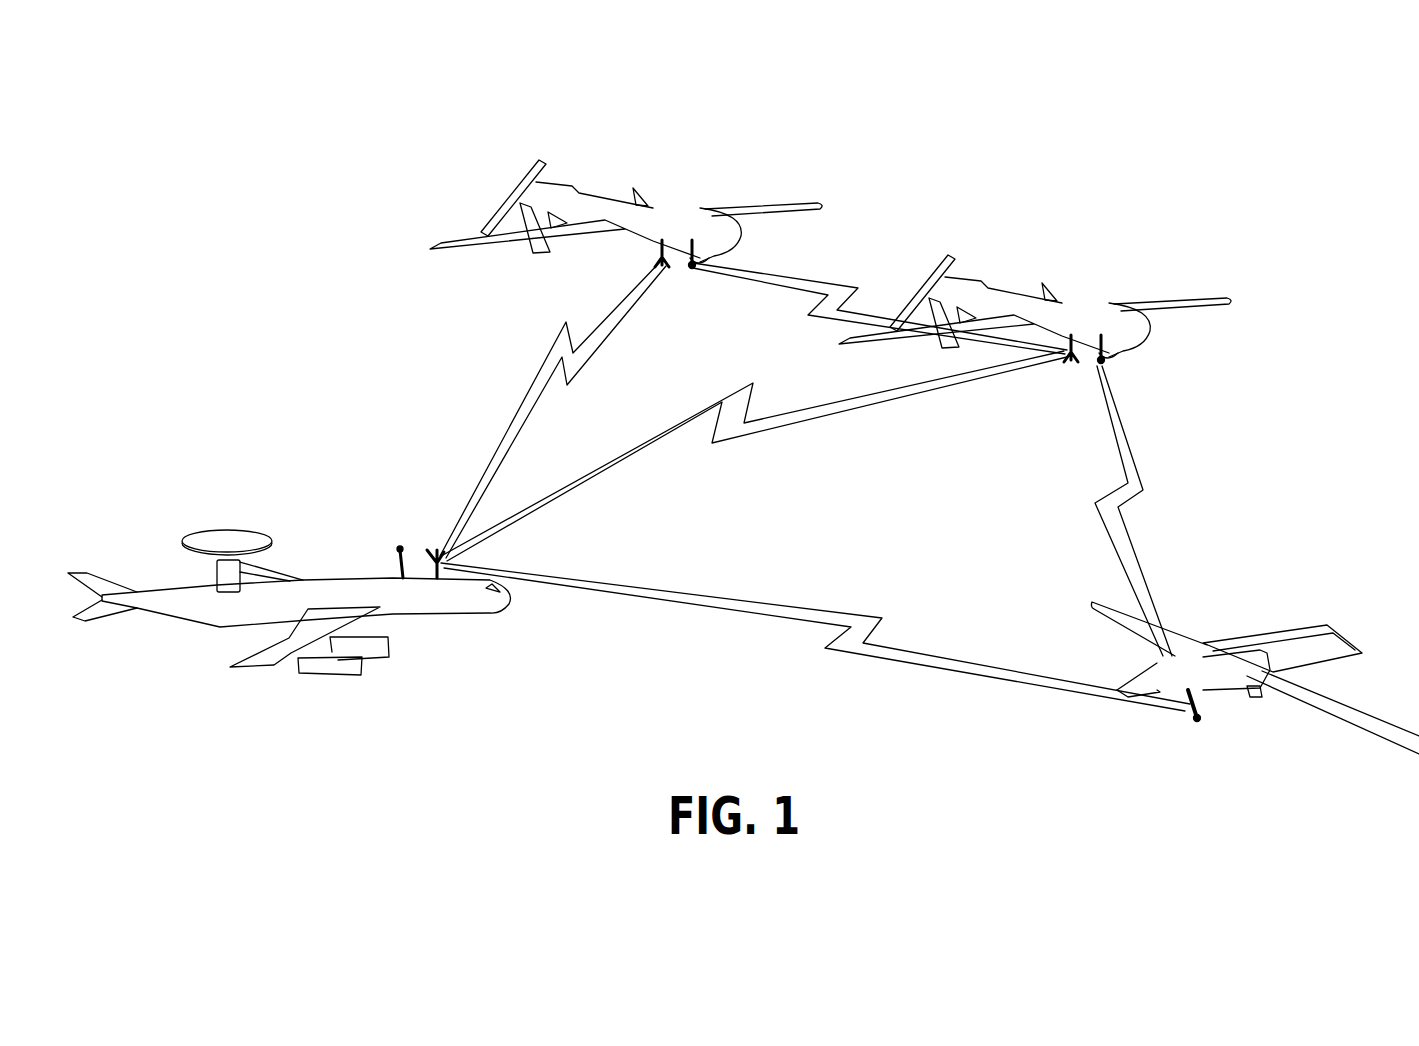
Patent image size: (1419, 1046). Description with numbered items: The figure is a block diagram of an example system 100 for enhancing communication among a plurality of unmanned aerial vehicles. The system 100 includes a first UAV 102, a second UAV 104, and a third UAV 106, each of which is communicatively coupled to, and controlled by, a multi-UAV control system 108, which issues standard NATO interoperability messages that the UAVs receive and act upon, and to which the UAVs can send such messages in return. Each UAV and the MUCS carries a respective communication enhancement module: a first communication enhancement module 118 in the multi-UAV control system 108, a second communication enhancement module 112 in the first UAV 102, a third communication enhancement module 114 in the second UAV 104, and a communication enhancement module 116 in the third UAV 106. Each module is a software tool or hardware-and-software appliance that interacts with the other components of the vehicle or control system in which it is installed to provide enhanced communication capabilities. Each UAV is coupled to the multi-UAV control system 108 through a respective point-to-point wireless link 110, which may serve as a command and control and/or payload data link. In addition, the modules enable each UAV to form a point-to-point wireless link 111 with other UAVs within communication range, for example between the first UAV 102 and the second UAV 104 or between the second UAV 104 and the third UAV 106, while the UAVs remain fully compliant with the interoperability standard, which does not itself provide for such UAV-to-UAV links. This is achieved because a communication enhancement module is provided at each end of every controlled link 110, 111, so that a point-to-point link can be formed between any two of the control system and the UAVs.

The system 100 is at (417, 135).
The first UAV 102 is at (697, 160).
The second UAV 104 is at (1085, 251).
The third UAV 106 is at (1237, 600).
The multi-UAV control system (MUCS) 108 is at (417, 427).
The point-to-point wireless link 110 is at (548, 351).
The point-to-point wireless link 111 is at (833, 288).
The second communication enhancement module 112 is at (694, 235).
The third communication enhancement module 114 is at (1103, 330).
The communication enhancement module 116 is at (1198, 685).
The first communication enhancement module 118 is at (436, 606).